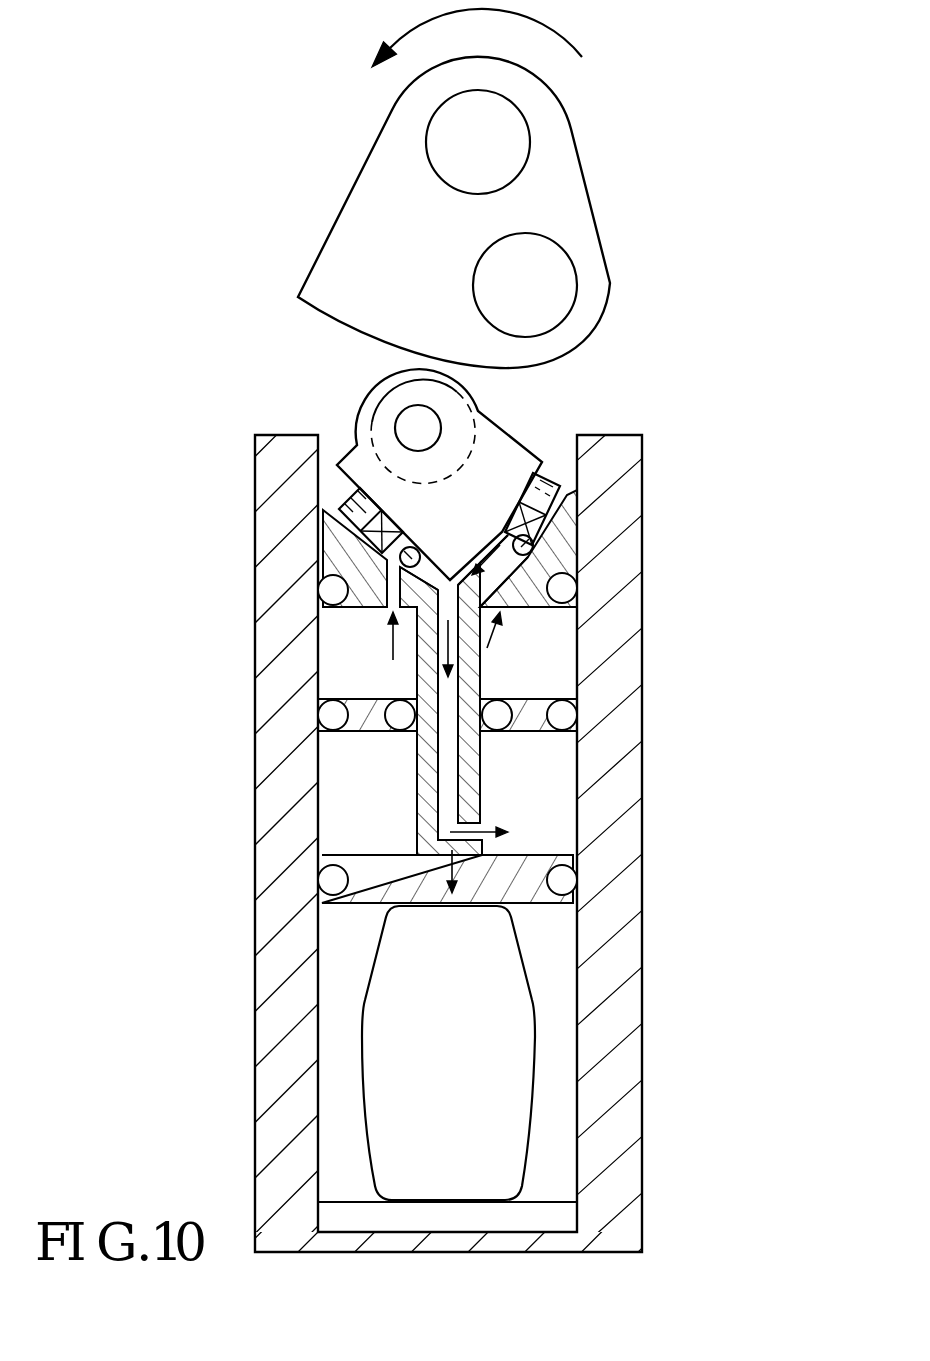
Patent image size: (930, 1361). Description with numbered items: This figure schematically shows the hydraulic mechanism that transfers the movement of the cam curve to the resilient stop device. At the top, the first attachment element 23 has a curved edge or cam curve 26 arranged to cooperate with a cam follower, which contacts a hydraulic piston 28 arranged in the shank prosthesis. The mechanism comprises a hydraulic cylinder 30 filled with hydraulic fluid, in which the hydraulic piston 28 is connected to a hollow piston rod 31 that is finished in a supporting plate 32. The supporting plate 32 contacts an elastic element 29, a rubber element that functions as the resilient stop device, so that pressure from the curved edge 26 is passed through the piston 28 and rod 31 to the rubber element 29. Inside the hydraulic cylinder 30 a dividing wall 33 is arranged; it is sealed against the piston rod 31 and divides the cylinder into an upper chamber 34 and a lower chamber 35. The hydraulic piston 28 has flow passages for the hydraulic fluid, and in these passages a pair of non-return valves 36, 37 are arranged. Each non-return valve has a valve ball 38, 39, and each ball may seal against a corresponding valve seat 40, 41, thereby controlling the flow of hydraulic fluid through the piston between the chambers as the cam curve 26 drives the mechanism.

The first attachment element 23 is at (553, 188).
The cam curve 26 is at (342, 333).
The hydraulic piston 28 is at (580, 538).
The elastic element 29 is at (470, 1053).
The hydraulic cylinder 30 is at (575, 652).
The hollow piston rod 31 is at (475, 787).
The supporting plate 32 is at (537, 862).
The dividing wall 33 is at (537, 718).
The upper chamber 34 is at (548, 681).
The lower chamber 35 is at (548, 787).
The non-return valve 36 is at (375, 488).
The non-return valve 37 is at (513, 492).
The valve ball 38 is at (418, 548).
The valve ball 39 is at (512, 536).
The valve seat 40 is at (435, 545).
The valve seat 41 is at (517, 629).